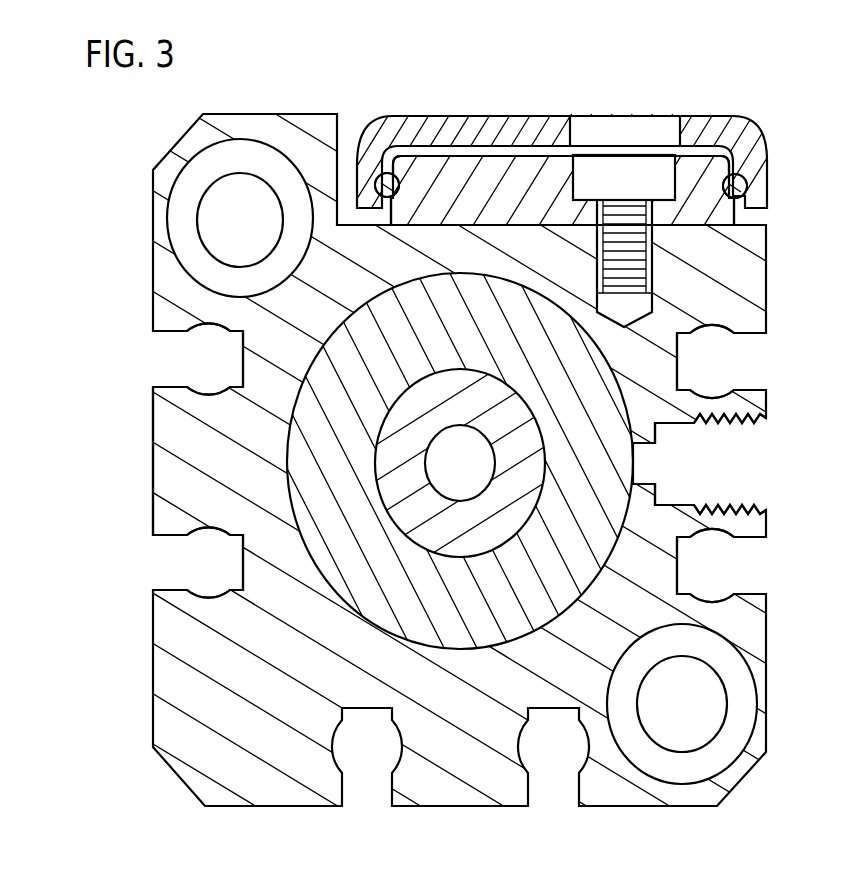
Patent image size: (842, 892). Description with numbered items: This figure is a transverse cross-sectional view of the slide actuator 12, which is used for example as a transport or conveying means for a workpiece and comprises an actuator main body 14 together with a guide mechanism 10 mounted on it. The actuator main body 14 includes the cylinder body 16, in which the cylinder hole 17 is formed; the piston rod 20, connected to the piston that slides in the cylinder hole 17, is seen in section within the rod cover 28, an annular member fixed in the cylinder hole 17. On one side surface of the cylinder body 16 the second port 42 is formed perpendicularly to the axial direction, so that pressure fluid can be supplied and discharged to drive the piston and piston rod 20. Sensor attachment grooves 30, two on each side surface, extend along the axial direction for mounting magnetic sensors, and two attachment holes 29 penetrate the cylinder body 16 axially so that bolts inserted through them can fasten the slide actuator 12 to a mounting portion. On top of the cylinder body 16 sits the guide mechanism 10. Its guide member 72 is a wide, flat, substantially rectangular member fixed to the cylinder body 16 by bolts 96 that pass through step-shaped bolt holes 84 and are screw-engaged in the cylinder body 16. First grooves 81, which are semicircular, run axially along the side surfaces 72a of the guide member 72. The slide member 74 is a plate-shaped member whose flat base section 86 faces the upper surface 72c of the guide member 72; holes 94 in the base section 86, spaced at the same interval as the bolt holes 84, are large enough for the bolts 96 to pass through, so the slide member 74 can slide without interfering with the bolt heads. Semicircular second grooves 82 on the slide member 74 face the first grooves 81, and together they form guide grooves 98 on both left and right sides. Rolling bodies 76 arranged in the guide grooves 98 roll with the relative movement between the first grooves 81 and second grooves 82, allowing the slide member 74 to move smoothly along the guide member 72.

The guide mechanism 10 is at (773, 121).
The slide actuator 12 is at (262, 65).
The actuator main body 14 is at (152, 204).
The cylinder body 16 is at (165, 467).
The cylinder hole 17 is at (452, 646).
The piston rod 20 is at (436, 527).
The rod cover 28 is at (372, 596).
The attachment holes 29 is at (215, 200).
The sensor attachment grooves 30 is at (243, 359).
The second port 42 is at (742, 470).
The guide member 72 is at (675, 230).
The side surfaces of the guide member 72a is at (386, 216).
The upper surface of the guide member 72c is at (505, 155).
The slide member 74 is at (688, 114).
The rolling bodies 76 is at (392, 194).
The first grooves 81 is at (396, 165).
The second grooves 82 is at (383, 179).
The bolt holes 84 is at (669, 195).
The base section 86 is at (453, 116).
The holes 94 is at (582, 122).
The bolts 96 is at (602, 172).
The guide grooves 98 is at (350, 78).